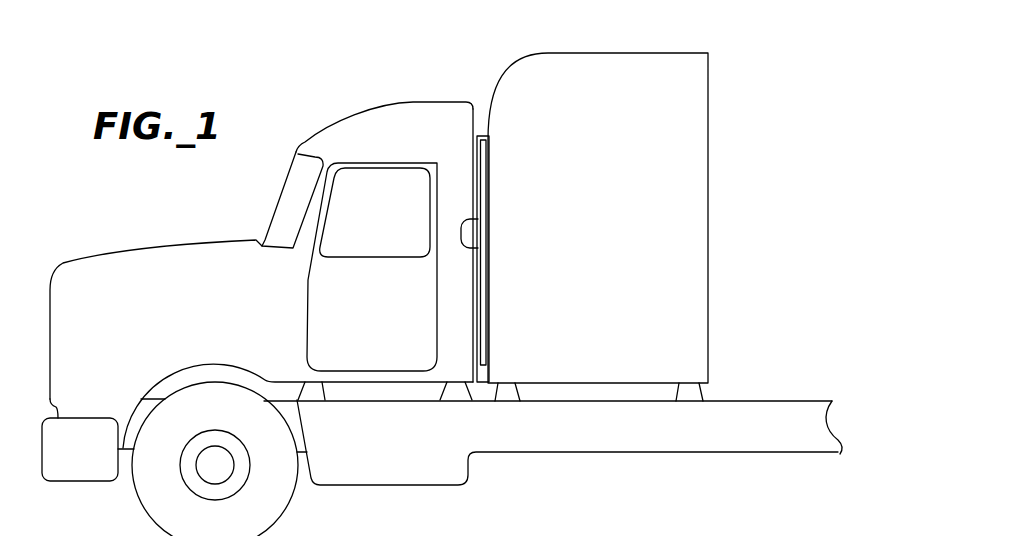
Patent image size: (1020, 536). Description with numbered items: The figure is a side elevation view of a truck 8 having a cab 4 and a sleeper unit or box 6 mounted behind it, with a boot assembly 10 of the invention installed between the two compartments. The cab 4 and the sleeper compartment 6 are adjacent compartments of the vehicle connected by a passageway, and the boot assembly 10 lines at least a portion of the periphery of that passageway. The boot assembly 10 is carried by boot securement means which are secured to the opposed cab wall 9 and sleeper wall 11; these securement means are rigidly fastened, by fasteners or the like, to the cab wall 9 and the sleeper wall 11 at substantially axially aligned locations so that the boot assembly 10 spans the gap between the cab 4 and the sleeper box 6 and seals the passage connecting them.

The cab 4 is at (333, 138).
The sleeper unit or box 6 is at (590, 53).
The truck 8 is at (426, 82).
The cab wall 9 is at (487, 168).
The boot assembly 10 is at (460, 286).
The sleeper wall 11 is at (480, 243).